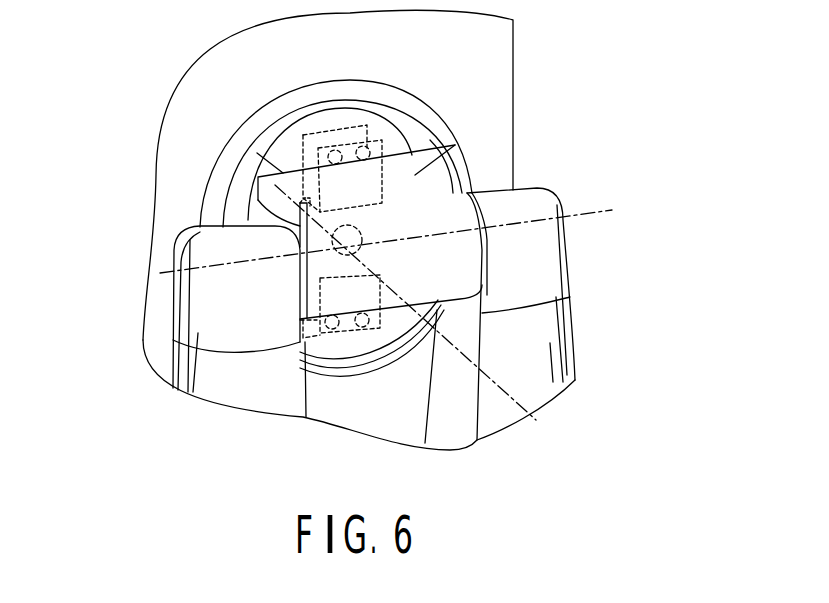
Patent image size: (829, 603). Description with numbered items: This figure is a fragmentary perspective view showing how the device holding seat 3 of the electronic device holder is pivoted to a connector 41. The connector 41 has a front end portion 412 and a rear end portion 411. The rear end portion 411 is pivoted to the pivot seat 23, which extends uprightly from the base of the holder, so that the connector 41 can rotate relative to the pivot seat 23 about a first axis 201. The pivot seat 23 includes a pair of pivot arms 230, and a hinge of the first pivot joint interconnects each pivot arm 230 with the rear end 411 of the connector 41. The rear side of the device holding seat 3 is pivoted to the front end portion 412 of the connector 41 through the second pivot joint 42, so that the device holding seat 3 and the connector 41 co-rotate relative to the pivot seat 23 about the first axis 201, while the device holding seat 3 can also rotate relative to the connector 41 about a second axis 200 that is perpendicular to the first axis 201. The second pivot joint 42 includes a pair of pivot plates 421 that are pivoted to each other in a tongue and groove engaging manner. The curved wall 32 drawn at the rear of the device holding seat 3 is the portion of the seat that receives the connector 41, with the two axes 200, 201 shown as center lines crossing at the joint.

The device holding seat 3 is at (542, 42).
The housing wall 32 is at (487, 92).
The connector 41 is at (396, 157).
The second pivot joint 42 is at (392, 258).
The rear end portion 411 is at (401, 347).
The front end portion 412 is at (398, 116).
The pivot plates 421 is at (300, 201).
The second axis 200 is at (424, 321).
The first axis 201 is at (404, 232).
The pivot arms 230 is at (203, 303).
The pivot seat 23 is at (585, 329).